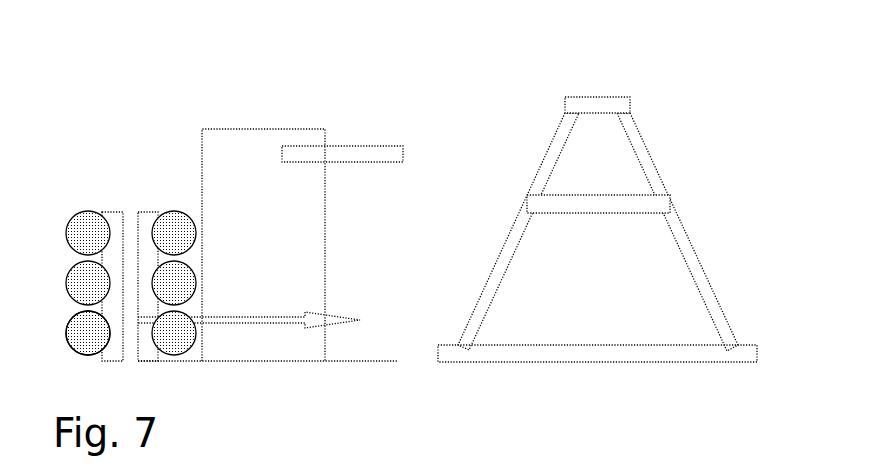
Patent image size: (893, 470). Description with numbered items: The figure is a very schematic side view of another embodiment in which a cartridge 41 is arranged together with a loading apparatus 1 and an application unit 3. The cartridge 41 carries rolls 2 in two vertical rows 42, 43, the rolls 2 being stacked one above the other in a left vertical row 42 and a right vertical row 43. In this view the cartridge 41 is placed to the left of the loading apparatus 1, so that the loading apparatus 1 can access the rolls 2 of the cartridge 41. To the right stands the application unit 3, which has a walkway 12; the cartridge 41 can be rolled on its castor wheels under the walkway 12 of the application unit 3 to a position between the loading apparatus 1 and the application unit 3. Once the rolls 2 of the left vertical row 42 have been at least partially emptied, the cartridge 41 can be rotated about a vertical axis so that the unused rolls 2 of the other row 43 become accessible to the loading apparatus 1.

The loading apparatus 1 is at (302, 129).
The rolls 2 is at (92, 338).
The application unit 3 is at (686, 226).
The walkway 12 is at (595, 105).
The cartridge 41 is at (128, 208).
The left vertical row of rolls 42 is at (80, 211).
The right vertical row of rolls 43 is at (173, 211).